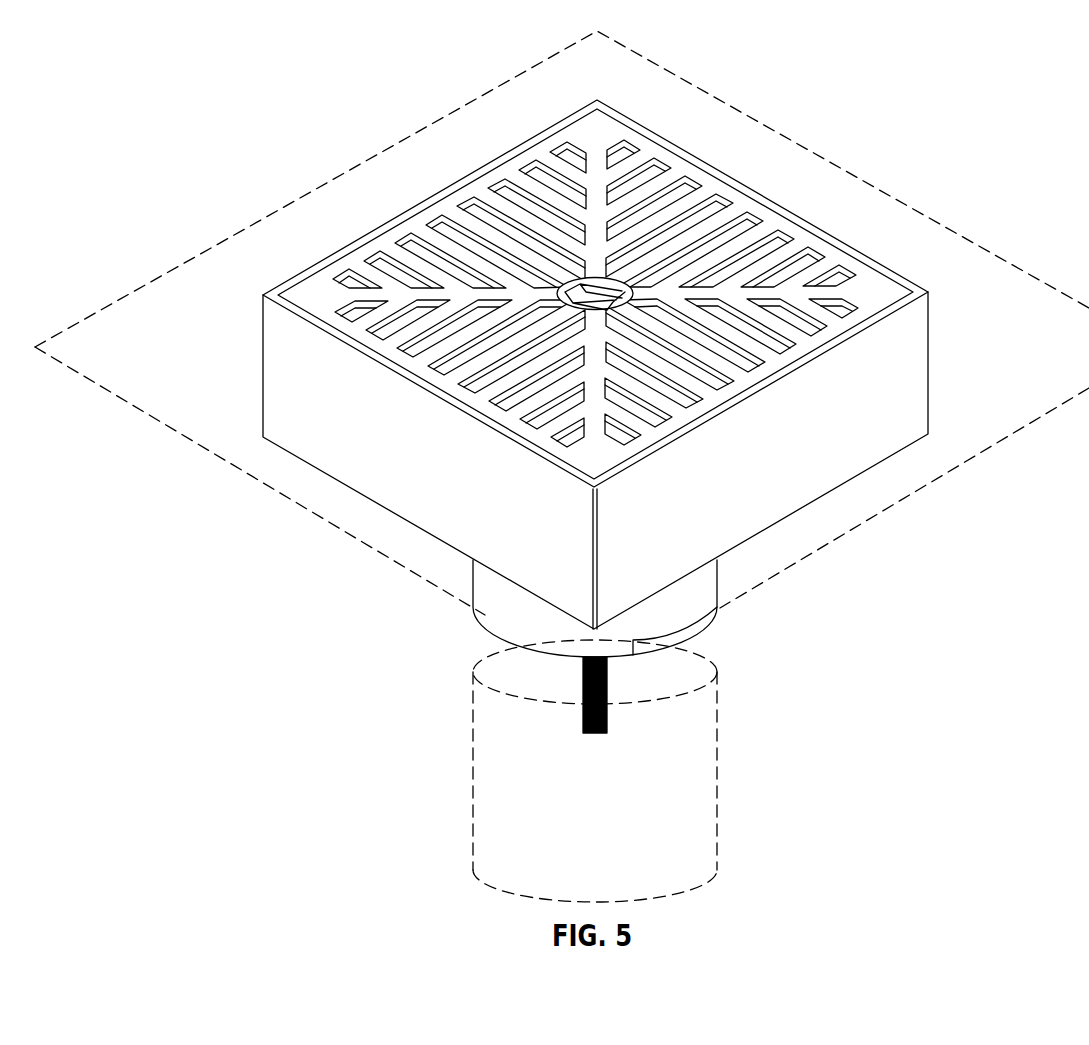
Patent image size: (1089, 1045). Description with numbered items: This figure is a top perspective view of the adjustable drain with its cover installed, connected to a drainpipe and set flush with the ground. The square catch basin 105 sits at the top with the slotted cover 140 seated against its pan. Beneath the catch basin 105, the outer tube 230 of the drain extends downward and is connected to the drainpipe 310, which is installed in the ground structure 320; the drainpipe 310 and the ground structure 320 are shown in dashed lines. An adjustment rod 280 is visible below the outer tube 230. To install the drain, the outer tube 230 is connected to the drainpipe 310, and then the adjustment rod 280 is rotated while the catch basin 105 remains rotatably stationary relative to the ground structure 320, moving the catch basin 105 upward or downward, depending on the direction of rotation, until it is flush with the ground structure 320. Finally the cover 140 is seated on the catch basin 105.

The catch basin 105 is at (301, 430).
The cover 140 is at (321, 291).
The outer tube 230 is at (678, 620).
The adjustment rod 280 is at (586, 700).
The drainpipe 310 is at (719, 721).
The ground structure 320 is at (148, 283).